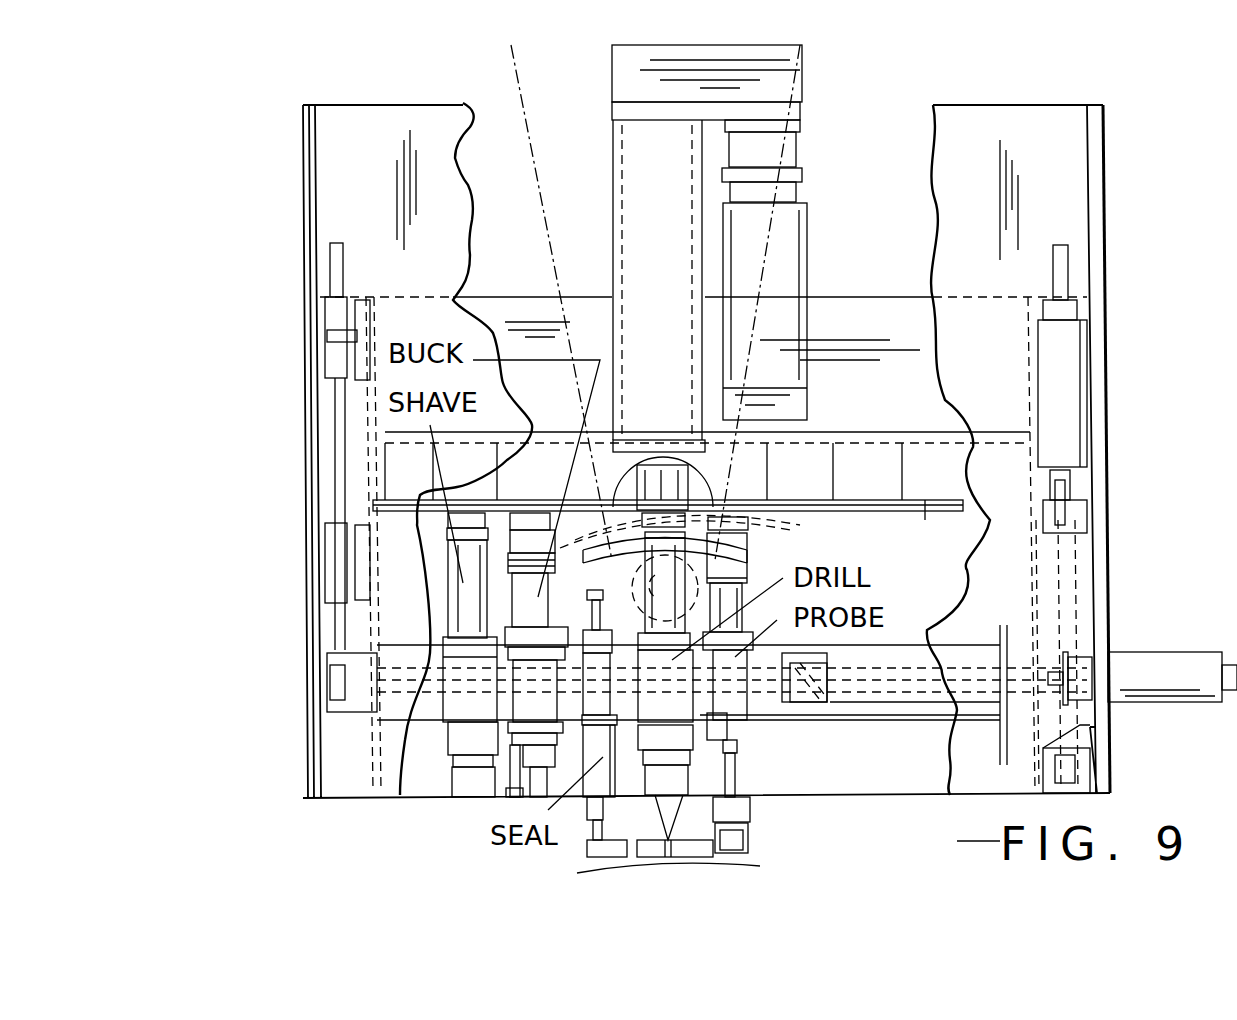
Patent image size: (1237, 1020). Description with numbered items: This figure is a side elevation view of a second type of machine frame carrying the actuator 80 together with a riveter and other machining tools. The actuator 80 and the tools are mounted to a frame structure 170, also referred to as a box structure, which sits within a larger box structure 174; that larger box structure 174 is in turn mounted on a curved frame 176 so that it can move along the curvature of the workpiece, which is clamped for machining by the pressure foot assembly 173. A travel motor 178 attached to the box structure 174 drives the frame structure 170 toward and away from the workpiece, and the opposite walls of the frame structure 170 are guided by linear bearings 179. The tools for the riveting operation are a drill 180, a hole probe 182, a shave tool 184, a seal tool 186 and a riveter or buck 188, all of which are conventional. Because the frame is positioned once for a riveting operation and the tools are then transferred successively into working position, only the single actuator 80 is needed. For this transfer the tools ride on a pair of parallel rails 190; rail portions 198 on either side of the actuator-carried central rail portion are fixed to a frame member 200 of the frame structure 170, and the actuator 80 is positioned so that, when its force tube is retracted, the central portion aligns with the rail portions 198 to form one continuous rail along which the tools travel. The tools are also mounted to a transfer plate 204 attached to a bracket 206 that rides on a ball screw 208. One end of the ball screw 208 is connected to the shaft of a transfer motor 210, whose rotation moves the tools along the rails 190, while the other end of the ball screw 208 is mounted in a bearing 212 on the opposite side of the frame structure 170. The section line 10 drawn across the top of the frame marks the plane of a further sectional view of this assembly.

The section line for FIG. 10 is at (250, 45).
The actuator 80 is at (610, 148).
The frame structure 170 is at (838, 297).
The box structure 174 is at (1104, 210).
The travel motor 178 is at (1080, 357).
The linear bearings 179 is at (325, 318).
The rail portions 198 is at (405, 503).
The curved frame 176 is at (775, 530).
The frame member 200 is at (1012, 508).
The transfer motor 210 is at (1160, 650).
The parallel rails 190 is at (930, 513).
The ball screw 208 is at (968, 663).
The bearing 212 is at (358, 648).
The transfer plate 204 is at (428, 712).
The bracket 206 is at (828, 700).
The drill 180 is at (700, 770).
The hole probe 182 is at (747, 768).
The shave tool 184 is at (452, 776).
The riveter or buck 188 is at (520, 803).
The seal tool 186 is at (588, 823).
The pressure foot assembly 173 is at (752, 837).